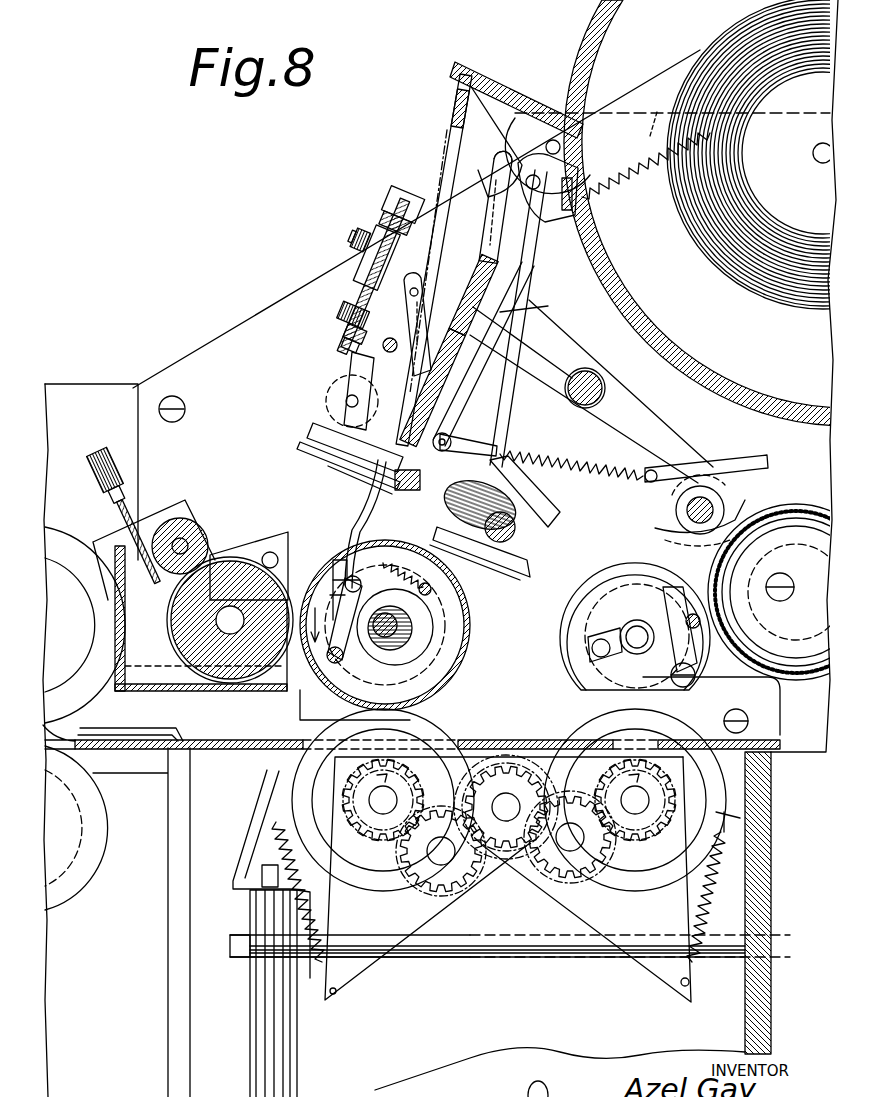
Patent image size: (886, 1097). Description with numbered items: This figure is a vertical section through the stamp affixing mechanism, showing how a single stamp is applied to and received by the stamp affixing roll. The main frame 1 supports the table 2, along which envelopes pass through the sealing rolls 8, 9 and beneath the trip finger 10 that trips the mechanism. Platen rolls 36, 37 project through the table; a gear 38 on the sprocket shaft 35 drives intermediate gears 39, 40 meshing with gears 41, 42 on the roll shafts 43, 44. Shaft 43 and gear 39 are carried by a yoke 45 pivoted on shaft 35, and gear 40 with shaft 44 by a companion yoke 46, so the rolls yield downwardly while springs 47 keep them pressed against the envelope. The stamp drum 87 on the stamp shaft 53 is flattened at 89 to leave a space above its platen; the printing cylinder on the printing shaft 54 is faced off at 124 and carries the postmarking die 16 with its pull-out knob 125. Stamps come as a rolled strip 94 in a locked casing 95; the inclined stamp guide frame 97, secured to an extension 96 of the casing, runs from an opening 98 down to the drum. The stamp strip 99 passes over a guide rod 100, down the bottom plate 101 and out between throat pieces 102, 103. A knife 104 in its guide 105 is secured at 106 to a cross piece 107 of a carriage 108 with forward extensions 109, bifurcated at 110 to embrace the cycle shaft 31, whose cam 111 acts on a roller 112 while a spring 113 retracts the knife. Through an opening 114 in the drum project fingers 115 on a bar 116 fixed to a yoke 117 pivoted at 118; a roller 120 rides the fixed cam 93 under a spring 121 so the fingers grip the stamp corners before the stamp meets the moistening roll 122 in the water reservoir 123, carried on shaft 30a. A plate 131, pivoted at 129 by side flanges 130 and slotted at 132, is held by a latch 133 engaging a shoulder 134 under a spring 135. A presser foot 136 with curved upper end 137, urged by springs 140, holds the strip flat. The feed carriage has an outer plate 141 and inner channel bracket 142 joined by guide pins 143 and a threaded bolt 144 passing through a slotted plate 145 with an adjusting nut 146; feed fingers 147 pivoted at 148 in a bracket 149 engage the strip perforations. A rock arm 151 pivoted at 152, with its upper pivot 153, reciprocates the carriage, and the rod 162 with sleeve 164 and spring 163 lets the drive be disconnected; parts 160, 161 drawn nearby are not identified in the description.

The main frame 1 is at (772, 812).
The table 2 is at (226, 742).
The sealing roll 8 is at (72, 580).
The sealing roll 9 is at (105, 794).
The trip finger 10 is at (78, 724).
The postmarking die 16 is at (702, 655).
The shaft 30a is at (232, 640).
The cycle shaft 31 is at (540, 538).
The sprocket shaft 35 is at (507, 820).
The platen roll 36 is at (333, 728).
The platen roll 37 is at (714, 745).
The gear 38 is at (512, 795).
The intermediate gear 39 is at (402, 858).
The intermediate gear 40 is at (602, 860).
The gear 41 is at (422, 800).
The gear 42 is at (608, 798).
The roll shaft 43 is at (382, 812).
The roll shaft 44 is at (637, 815).
The yoke 45 is at (504, 878).
The companion yoke 46 is at (586, 879).
The springs 47 is at (266, 838).
The stamp shaft 53 is at (412, 648).
The printing shaft 54 is at (638, 634).
The stamp drum 87 is at (412, 642).
The flattened portion 89 is at (425, 706).
The fixed cam 93 is at (410, 640).
The rolled strip of stamps 94 is at (718, 235).
The casing 95 is at (596, 27).
The extension 96 is at (513, 92).
The stamp guide frame 97 is at (530, 270).
The opening 98 is at (586, 170).
The stamp strip 99 is at (510, 236).
The guide rod 100 is at (612, 204).
The bottom plate 101 is at (542, 303).
The throat piece 102 is at (368, 520).
The throat piece 103 is at (405, 500).
The knife 104 is at (350, 476).
The knife guide 105 is at (300, 446).
The knife securing point 106 is at (510, 578).
The cross piece 107 is at (478, 458).
The knife carriage 108 is at (452, 441).
The forward extensions 109 is at (325, 430).
The bifurcated rear end 110 is at (518, 526).
The cam 111 is at (505, 498).
The roller 112 is at (544, 588).
The spring 113 is at (570, 460).
The opening 114 is at (332, 560).
The gripping fingers 115 is at (340, 556).
The bar 116 is at (333, 572).
The yoke 117 is at (345, 658).
The pivot 118 is at (340, 664).
The roller 120 is at (400, 622).
The spring 121 is at (412, 569).
The moistening roll 122 is at (238, 566).
The water reservoir 123 is at (125, 615).
The faced-off portion 124 is at (696, 690).
The pull-out knob 125 is at (766, 592).
The pivot 129 is at (345, 399).
The side flanges 130 is at (320, 328).
The pivoted plate 131 is at (458, 98).
The slot 132 is at (455, 141).
The latch 133 is at (450, 124).
The shoulder 134 is at (494, 186).
The spring 135 is at (626, 128).
The presser foot 136 is at (480, 400).
The curved upper end 137 is at (494, 256).
The springs 140 is at (350, 365).
The outer carriage plate 141 is at (330, 307).
The channel bracket 142 is at (420, 268).
The guide pins 143 is at (374, 198).
The threaded bolt 144 is at (338, 230).
The slotted plate 145 is at (332, 252).
The adjusting nut 146 is at (312, 241).
The feed fingers 147 is at (448, 362).
The pivot 148 is at (480, 298).
The bracket 149 is at (345, 264).
The rock arm 151 is at (652, 432).
The pivot 152 is at (718, 478).
The pivot 153 is at (366, 217).
The hub 160 is at (680, 512).
The lever 161 is at (662, 530).
The rod 162 is at (575, 375).
The spring 163 is at (420, 282).
The sleeve 164 is at (607, 388).